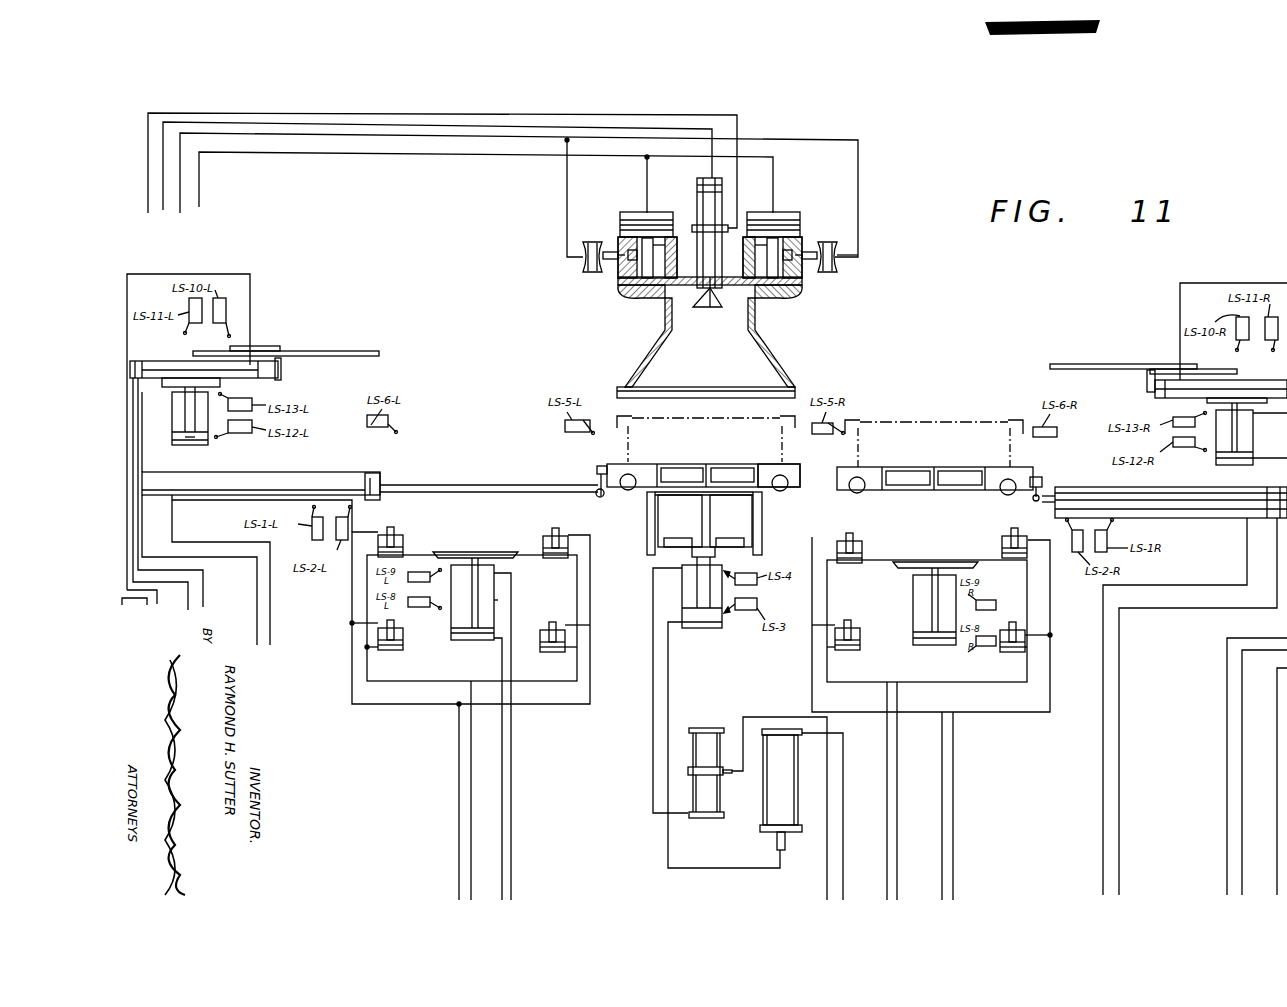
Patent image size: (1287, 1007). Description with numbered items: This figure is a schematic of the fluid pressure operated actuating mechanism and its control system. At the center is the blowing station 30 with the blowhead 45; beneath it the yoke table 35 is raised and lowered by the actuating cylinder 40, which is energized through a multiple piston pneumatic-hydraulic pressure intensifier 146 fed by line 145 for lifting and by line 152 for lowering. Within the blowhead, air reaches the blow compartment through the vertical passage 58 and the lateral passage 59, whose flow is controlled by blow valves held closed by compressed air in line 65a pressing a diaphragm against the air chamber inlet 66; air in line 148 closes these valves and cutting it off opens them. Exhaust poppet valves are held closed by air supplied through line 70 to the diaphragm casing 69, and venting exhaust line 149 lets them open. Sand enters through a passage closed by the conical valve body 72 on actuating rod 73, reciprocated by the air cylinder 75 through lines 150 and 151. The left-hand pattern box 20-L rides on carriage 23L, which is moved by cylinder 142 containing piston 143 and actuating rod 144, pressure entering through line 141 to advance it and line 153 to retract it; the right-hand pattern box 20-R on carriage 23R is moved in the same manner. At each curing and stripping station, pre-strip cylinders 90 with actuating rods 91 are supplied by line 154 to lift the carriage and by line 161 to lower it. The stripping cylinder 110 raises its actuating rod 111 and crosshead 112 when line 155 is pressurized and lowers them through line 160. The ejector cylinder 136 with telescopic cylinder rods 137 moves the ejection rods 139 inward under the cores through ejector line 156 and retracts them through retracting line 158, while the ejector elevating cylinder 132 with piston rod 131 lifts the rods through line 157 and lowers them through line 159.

The left-hand pattern box 20-L is at (698, 456).
The right-hand pattern box 20-R is at (935, 457).
The left-hand pattern box carriage 23L is at (792, 463).
The right-hand pattern box carriage 23R is at (1020, 467).
The central blowing station 30 is at (662, 333).
The yoke table 35 is at (762, 535).
The actuating cylinder 40 is at (705, 630).
The blowhead 45 is at (785, 373).
The vertically-extending passage 58 is at (748, 322).
The laterally and vertically-extending passage 59 is at (640, 298).
The air supply line 65a is at (645, 178).
The air chamber inlet 66 is at (710, 258).
The exhaust valve casing 69 is at (825, 275).
The exhaust valve air line 70 is at (565, 238).
The sand-fill valve body 72 is at (708, 312).
The valve actuating rod 73 is at (705, 200).
The air cylinder 75 is at (692, 228).
The pre-strip cylinders 90 is at (403, 548).
The actuating rods 91 is at (392, 530).
The stripping cylinder 110 is at (465, 640).
The actuating rod 111 is at (498, 600).
The crosshead 112 is at (462, 552).
The actuating piston rod 131 is at (206, 440).
The ejector elevating cylinder 132 is at (186, 445).
The ejector cylinder 136 is at (160, 362).
The telescopic cylinder rods 137 is at (280, 380).
The ejection rods 139 is at (334, 351).
The line 141 is at (256, 582).
The carriage cylinder 142 is at (293, 472).
The piston 143 is at (368, 473).
The actuating rod 144 is at (510, 487).
The line 145 is at (843, 855).
The pneumatic-hydraulic pressure intensifier 146 is at (706, 726).
The blow valve line 148 is at (199, 204).
The exhaust line 149 is at (180, 208).
The line 150 is at (163, 206).
The line 151 is at (148, 208).
The line 152 is at (827, 860).
The line 153 is at (270, 612).
The supply line 154 is at (471, 840).
The line 155 is at (510, 838).
The ejector line 156 is at (157, 604).
The line 157 is at (203, 607).
The ejector carriage retracting line 158 is at (133, 613).
The line 159 is at (188, 606).
The line 160 is at (511, 790).
The line 161 is at (459, 790).